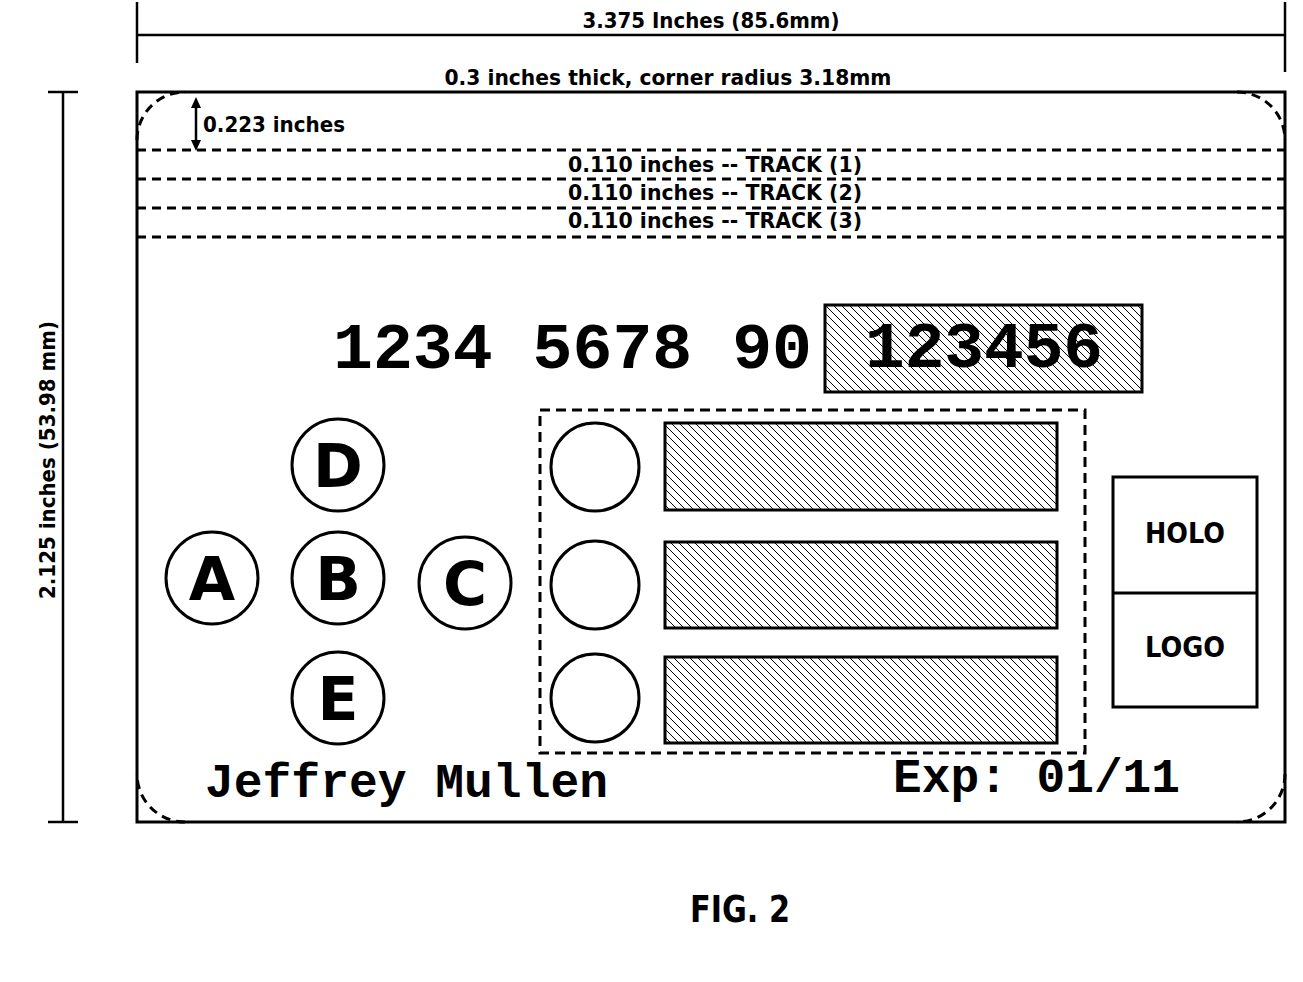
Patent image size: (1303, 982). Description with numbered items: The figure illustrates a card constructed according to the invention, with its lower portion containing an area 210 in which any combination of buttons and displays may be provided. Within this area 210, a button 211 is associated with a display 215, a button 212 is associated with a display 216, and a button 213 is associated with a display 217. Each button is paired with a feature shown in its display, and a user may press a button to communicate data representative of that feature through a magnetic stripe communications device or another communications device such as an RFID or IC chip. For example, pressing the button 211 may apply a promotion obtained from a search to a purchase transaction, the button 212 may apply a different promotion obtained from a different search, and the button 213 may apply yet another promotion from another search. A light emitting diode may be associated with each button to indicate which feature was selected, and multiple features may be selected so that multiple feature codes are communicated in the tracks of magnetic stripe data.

The area 210 is at (738, 410).
The button 211 is at (551, 453).
The button 212 is at (561, 553).
The button 213 is at (561, 667).
The display 215 is at (702, 510).
The display 216 is at (705, 628).
The display 217 is at (690, 744).